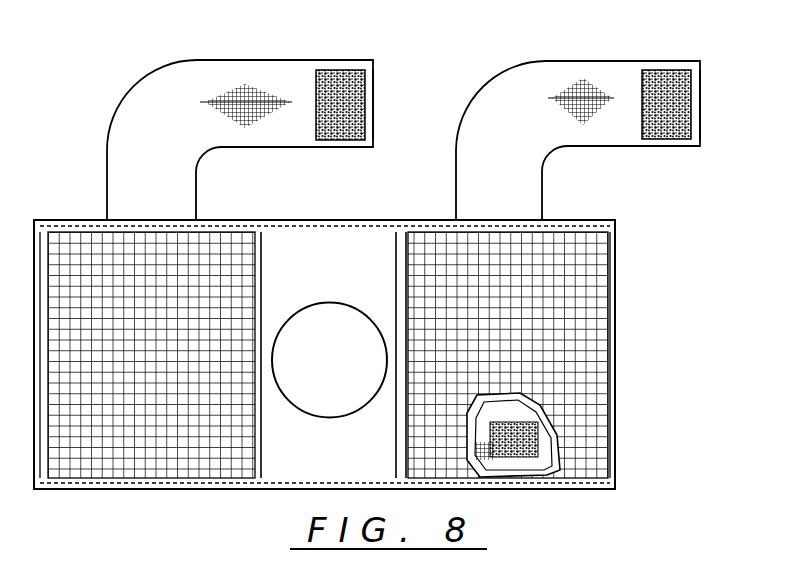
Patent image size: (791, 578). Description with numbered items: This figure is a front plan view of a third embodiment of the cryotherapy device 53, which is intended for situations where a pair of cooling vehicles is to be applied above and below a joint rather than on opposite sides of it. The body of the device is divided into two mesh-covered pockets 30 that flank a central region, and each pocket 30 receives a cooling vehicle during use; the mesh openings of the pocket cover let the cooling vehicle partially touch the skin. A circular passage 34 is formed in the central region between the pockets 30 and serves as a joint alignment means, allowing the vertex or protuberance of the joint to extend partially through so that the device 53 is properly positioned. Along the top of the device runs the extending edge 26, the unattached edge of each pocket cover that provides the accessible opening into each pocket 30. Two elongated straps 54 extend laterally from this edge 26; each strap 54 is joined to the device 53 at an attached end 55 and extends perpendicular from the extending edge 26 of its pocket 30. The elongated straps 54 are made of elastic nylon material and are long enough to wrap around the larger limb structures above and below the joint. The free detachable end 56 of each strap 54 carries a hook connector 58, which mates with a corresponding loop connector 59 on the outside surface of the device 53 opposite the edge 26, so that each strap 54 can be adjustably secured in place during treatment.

The extending edge 26 is at (220, 224).
The pocket 30 is at (498, 465).
The circular passage 34 is at (352, 376).
The device 53 is at (138, 61).
The elongated strap 54 is at (278, 70).
The attached end 55 is at (150, 220).
The detachable end 56 is at (373, 93).
The hook connector 58 is at (333, 78).
The loop connector 59 is at (525, 455).